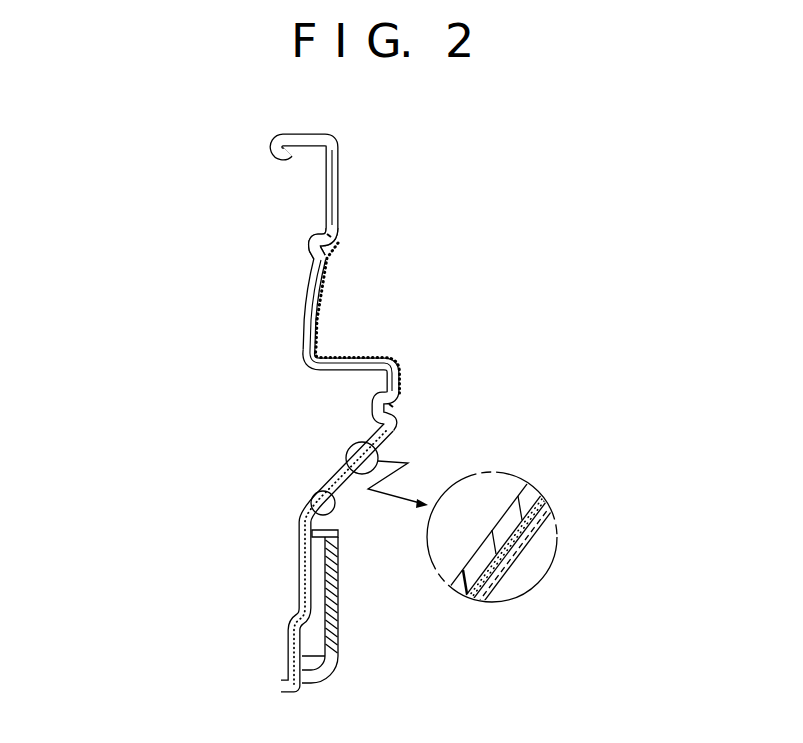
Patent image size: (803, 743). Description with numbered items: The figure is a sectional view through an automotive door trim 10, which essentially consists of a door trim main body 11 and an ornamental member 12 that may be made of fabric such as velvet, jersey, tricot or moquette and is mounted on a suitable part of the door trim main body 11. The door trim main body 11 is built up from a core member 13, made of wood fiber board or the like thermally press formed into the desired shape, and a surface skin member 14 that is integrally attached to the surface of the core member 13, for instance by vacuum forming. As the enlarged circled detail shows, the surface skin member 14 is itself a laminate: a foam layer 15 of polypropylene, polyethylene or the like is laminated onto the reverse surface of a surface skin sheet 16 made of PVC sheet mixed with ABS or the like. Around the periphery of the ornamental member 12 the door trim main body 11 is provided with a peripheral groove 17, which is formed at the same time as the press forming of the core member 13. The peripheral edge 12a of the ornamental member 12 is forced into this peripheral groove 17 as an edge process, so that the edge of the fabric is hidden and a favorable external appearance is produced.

The automotive door trim 10 is at (297, 212).
The door trim main body 11 is at (137, 420).
The ornamental member 12 is at (320, 313).
The peripheral edge 12a is at (335, 239).
The core member 13 is at (347, 472).
The surface skin member 14 is at (325, 508).
The foam layer 15 is at (500, 567).
The surface skin sheet 16 is at (540, 531).
The peripheral groove 17 is at (345, 230).